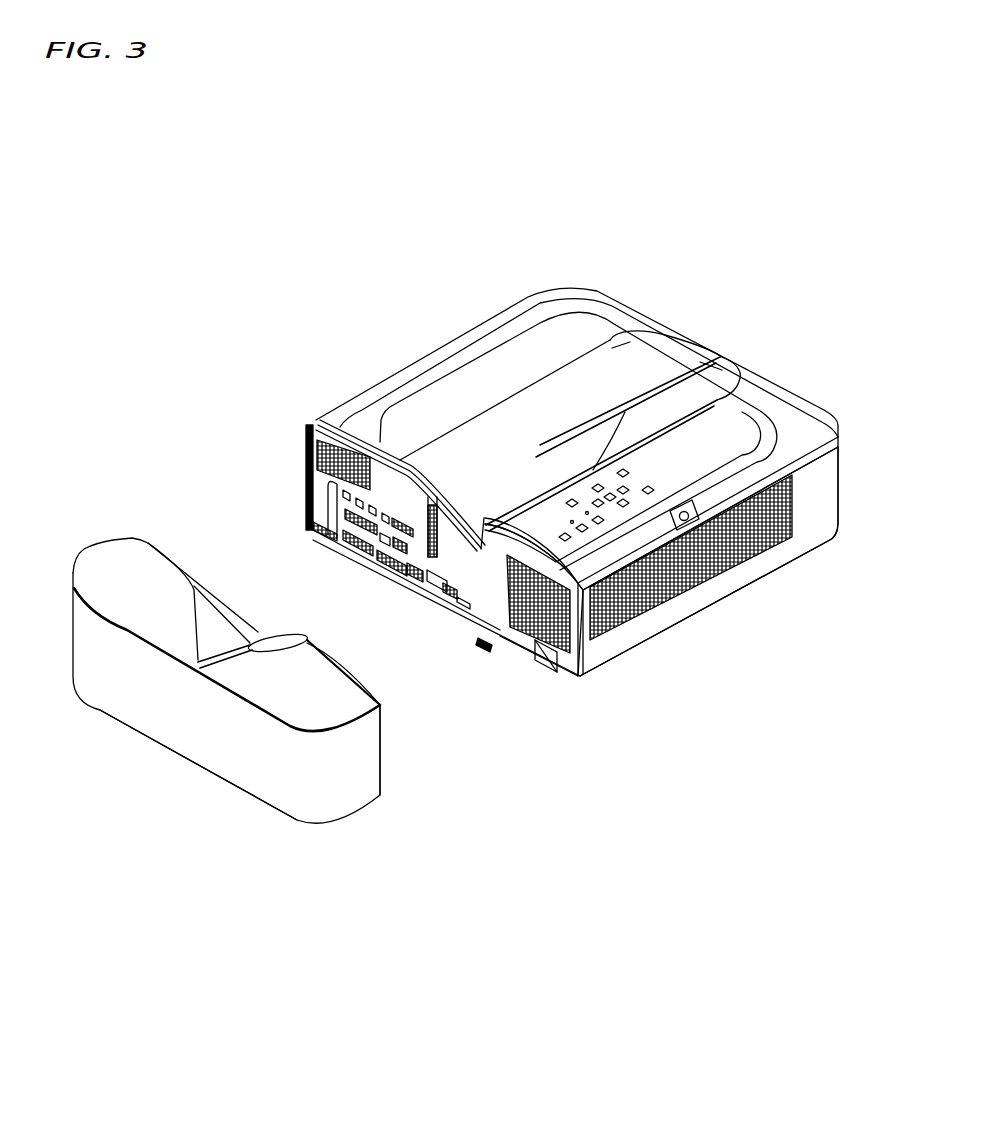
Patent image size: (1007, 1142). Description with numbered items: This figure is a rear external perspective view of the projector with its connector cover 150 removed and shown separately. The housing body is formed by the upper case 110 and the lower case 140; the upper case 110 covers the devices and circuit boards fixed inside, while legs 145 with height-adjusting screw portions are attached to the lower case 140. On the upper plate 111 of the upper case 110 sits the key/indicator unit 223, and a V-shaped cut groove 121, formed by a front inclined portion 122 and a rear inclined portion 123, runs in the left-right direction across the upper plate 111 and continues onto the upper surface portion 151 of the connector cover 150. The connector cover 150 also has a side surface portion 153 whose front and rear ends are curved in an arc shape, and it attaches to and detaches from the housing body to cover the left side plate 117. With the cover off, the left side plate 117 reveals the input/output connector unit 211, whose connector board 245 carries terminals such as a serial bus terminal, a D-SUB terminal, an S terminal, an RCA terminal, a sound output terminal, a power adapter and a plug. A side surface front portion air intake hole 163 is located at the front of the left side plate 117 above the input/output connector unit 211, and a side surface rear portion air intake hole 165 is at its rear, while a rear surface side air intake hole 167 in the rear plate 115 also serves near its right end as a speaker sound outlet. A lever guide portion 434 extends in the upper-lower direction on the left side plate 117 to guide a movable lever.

The upper case 110 is at (572, 439).
The upper plate 111 is at (562, 335).
The rear plate 115 is at (703, 600).
The left side plate 117 is at (497, 598).
The cut groove 121 is at (113, 760).
The front inclined portion 122 is at (655, 347).
The rear inclined portion 123 is at (722, 384).
The lower case 140 is at (343, 538).
The leg 145 is at (484, 644).
The connector cover 150 is at (331, 862).
The upper surface portion 151 is at (295, 680).
The side surface portion 153 is at (270, 753).
The side surface front portion air intake hole 163 is at (327, 453).
The side surface rear portion air intake hole 165 is at (560, 622).
The rear surface side air intake hole 167 is at (660, 570).
The input/output connector unit 211 is at (326, 528).
The key/indicator unit 223 is at (627, 507).
The connector board 245 is at (348, 512).
The lever guide portion 434 is at (433, 520).